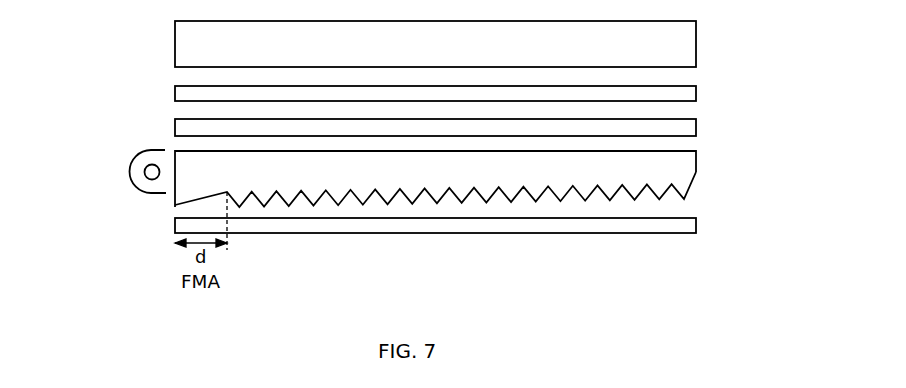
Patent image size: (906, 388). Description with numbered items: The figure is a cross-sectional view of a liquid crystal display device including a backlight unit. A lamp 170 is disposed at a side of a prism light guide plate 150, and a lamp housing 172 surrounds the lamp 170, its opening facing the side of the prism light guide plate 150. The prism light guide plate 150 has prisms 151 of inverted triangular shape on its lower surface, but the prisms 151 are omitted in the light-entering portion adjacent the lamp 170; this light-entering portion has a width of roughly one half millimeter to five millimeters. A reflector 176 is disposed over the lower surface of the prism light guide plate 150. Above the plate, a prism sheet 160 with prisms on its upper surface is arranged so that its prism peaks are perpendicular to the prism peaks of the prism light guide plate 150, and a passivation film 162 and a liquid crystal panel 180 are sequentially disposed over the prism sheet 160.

The liquid crystal panel 180 is at (668, 42).
The passivation film 162 is at (662, 92).
The prism sheet 160 is at (662, 126).
The prism light guide plate 150 is at (662, 162).
The prisms 151 is at (682, 182).
The reflector 176 is at (662, 223).
The lamp housing 172 is at (130, 154).
The lamp 170 is at (144, 172).